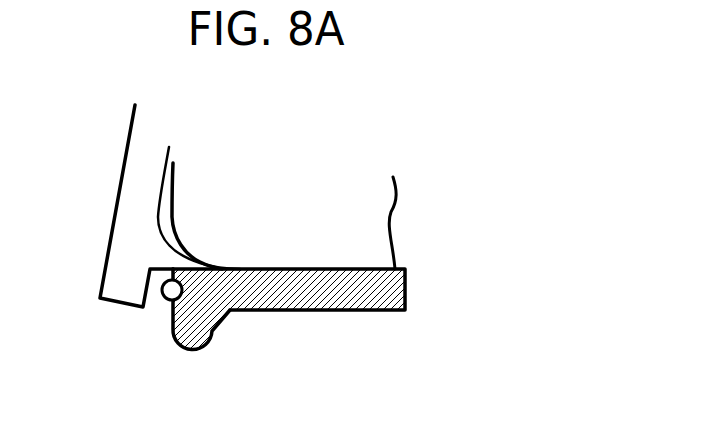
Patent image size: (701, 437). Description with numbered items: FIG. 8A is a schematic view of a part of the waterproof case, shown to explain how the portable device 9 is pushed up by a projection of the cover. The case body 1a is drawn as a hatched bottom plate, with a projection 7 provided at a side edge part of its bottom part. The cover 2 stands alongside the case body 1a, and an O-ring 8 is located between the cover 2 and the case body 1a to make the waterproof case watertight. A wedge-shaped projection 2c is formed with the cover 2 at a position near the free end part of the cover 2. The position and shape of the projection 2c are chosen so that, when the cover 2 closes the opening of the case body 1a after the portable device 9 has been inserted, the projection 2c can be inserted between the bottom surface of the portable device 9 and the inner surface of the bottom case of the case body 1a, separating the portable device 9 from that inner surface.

The case body 1a is at (352, 295).
The cover 2 is at (130, 173).
The wedge-shaped projection 2c is at (163, 253).
The projection 7 is at (203, 330).
The O-ring 8 is at (163, 300).
The portable device 9 is at (377, 237).